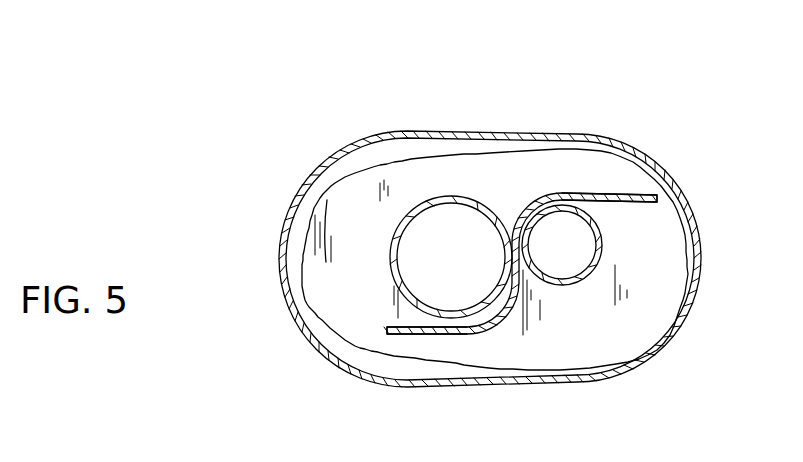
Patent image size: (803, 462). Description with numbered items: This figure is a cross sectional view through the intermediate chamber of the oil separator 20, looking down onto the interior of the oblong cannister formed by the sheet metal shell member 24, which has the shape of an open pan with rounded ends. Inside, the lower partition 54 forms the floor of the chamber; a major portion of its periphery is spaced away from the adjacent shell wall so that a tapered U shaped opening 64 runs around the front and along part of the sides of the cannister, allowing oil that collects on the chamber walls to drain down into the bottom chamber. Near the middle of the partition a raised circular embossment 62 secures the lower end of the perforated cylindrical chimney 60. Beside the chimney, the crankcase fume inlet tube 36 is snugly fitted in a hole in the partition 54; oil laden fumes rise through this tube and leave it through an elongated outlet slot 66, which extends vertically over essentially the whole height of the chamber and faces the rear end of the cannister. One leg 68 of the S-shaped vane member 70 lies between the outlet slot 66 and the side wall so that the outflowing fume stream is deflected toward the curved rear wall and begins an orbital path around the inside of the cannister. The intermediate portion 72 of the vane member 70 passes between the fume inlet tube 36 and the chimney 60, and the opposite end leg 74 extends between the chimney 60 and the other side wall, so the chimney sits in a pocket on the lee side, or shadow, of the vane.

The oil separator 20 is at (286, 323).
The shell member 24 is at (387, 130).
The crankcase fume inlet tube 36 is at (603, 256).
The lower partition 54 is at (590, 334).
The chimney member 60 is at (466, 200).
The raised circular embossment 62 is at (460, 274).
The tapered U shaped opening 64 is at (320, 187).
The elongated outlet slot 66 is at (601, 226).
The leg 68 is at (592, 193).
The S-shaped vane member 70 is at (530, 203).
The intermediate portion 72 is at (518, 285).
The opposite end leg 74 is at (471, 335).